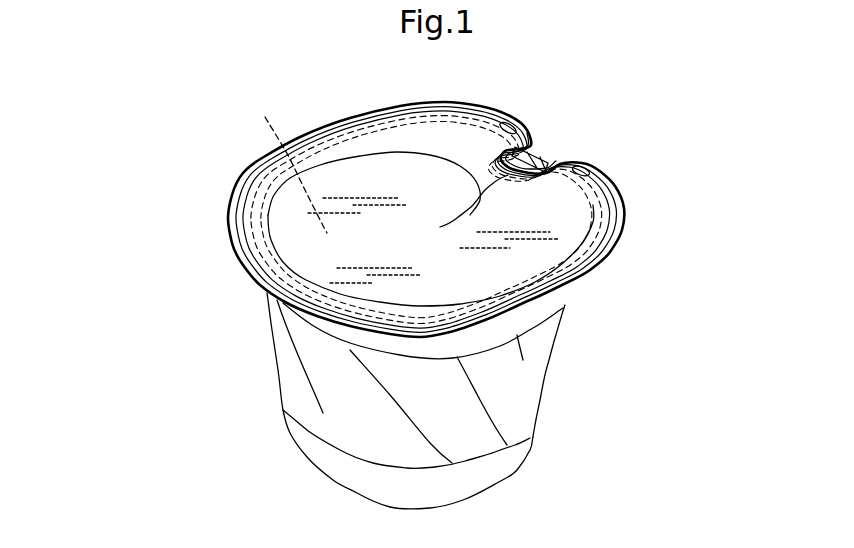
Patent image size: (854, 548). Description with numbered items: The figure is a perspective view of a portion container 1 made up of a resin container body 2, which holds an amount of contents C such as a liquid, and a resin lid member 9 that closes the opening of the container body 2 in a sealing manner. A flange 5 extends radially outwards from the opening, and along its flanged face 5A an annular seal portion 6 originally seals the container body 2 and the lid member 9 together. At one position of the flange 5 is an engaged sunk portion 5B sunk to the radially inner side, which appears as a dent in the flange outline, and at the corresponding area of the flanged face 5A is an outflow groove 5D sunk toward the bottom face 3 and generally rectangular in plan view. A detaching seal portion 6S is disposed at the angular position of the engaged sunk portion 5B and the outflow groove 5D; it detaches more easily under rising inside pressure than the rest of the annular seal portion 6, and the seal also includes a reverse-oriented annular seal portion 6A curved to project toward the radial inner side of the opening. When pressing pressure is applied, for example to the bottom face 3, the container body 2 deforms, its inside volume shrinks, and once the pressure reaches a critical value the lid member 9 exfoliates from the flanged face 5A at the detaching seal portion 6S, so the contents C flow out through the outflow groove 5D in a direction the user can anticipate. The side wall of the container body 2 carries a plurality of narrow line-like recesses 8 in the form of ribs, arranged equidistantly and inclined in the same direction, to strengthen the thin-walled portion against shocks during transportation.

The portion container 1 is at (148, 164).
The container body 2 is at (533, 397).
The bottom face 3 is at (335, 481).
The flange 5 is at (600, 263).
The flanged face 5A is at (631, 209).
The engaged sunk portion 5B is at (547, 163).
The outflow groove 5D is at (557, 153).
The annular seal portion 6 is at (242, 233).
The reverse-oriented annular seal portion 6A is at (441, 226).
The detaching seal portion 6S is at (540, 160).
The line-like recesses 8 is at (297, 358).
The lid member 9 is at (597, 203).
The contents C is at (290, 161).